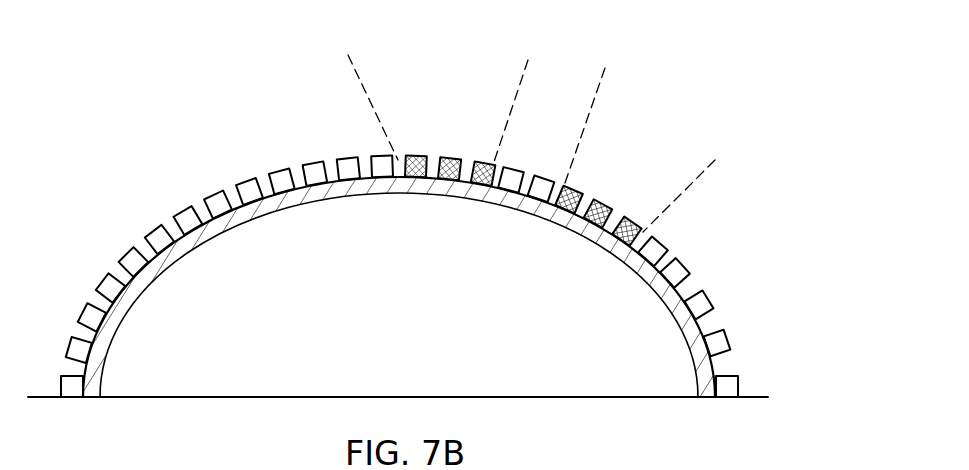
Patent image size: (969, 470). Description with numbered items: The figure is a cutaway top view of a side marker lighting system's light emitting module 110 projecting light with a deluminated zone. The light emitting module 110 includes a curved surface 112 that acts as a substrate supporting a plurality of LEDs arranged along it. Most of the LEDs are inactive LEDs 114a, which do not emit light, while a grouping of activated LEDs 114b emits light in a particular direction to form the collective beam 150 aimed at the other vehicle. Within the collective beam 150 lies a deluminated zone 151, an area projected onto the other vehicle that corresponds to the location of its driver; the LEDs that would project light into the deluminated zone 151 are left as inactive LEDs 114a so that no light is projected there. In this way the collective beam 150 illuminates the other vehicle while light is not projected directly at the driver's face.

The light emitting module 110 is at (398, 225).
The surface 112 is at (683, 293).
The inactive LEDs 114a is at (153, 230).
The activated LEDs 114b is at (448, 157).
The collective beam 150 is at (531, 117).
The deluminated zone 151 is at (581, 97).